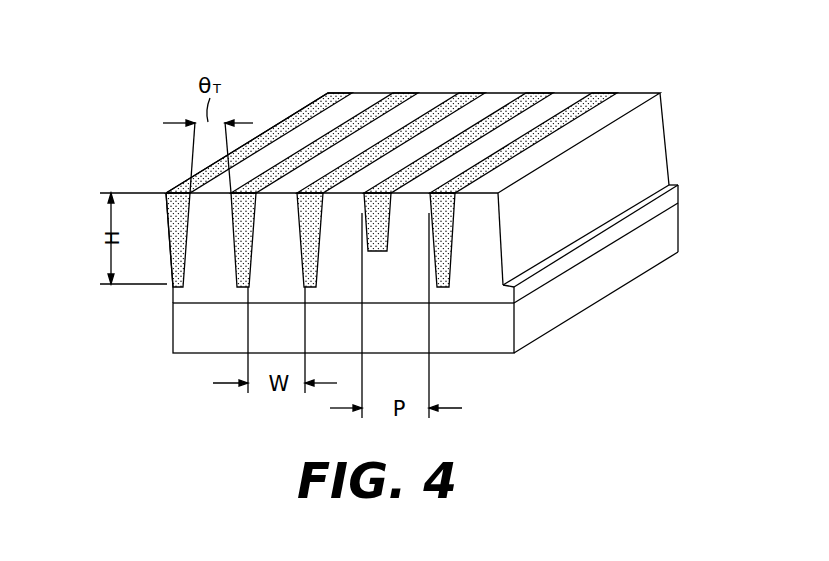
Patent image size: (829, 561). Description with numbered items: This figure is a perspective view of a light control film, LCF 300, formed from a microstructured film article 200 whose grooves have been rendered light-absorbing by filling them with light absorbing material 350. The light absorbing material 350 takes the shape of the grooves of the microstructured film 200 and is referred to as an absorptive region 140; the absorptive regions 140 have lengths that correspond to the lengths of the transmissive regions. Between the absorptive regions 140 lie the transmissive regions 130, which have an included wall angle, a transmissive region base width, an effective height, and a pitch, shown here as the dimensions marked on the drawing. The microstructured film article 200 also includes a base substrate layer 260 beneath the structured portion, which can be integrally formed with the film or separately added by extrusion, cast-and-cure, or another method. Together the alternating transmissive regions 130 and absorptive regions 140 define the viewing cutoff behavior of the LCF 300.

The LCF 300 is at (590, 58).
The microstructured film article 200 is at (602, 200).
The base substrate layer 260 is at (225, 340).
The light absorbing material 350 is at (450, 105).
The absorptive region 140 is at (443, 240).
The transmissive region 130 is at (487, 242).